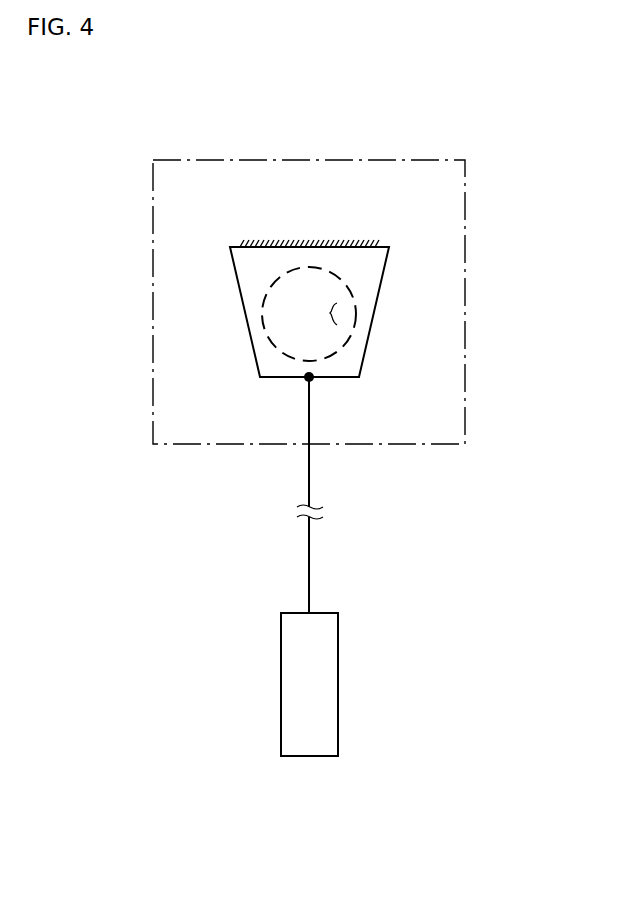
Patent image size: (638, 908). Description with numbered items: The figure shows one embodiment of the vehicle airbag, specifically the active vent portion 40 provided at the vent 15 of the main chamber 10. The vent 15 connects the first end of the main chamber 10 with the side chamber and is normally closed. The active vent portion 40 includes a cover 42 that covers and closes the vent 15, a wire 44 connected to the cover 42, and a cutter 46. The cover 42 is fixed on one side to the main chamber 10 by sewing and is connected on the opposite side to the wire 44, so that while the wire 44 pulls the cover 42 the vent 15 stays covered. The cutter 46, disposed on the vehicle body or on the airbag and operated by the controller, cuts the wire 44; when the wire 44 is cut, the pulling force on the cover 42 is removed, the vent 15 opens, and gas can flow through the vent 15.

The main chamber 10 is at (438, 240).
The vent 15 is at (335, 313).
The active vent portion 40 is at (298, 457).
The cover 42 is at (252, 281).
The wire 44 is at (311, 424).
The cutter 46 is at (338, 682).